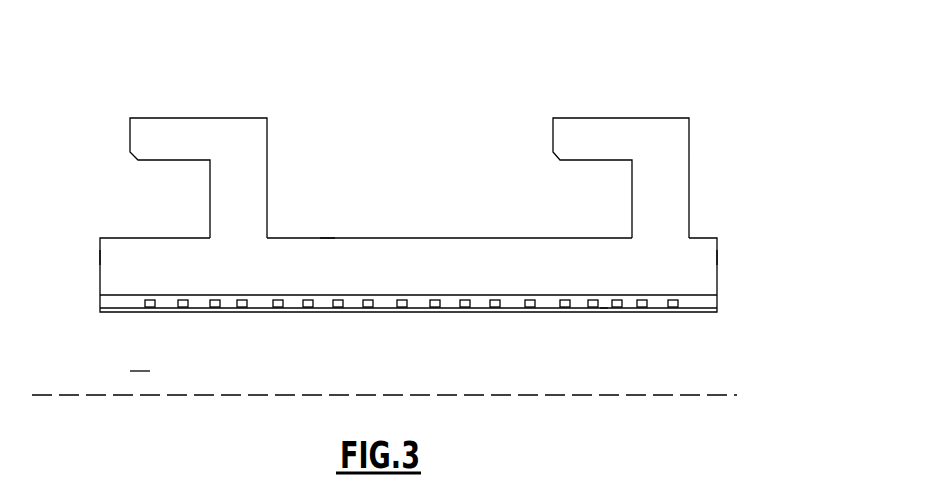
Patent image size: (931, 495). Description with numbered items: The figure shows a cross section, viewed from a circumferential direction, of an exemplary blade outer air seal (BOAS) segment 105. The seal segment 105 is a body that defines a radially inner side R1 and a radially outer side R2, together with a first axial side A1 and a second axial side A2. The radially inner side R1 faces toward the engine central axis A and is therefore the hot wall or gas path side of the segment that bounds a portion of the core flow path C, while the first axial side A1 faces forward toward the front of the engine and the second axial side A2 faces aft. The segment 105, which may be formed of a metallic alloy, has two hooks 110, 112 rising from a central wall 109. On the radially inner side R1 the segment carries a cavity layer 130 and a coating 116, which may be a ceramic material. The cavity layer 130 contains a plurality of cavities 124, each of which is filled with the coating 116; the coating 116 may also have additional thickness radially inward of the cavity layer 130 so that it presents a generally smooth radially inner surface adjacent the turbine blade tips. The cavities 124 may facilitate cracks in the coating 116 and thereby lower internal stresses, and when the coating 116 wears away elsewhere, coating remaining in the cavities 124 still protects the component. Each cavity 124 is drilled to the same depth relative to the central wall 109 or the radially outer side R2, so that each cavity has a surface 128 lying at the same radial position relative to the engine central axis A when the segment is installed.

The BOAS segment 105 is at (414, 193).
The central wall 109 is at (444, 272).
The hook 110 is at (192, 130).
The hook 112 is at (585, 130).
The coating 116 is at (437, 312).
The cavities 124 is at (183, 307).
The surface 128 is at (642, 300).
The cavity layer 130 is at (707, 300).
The radially inner side R1 is at (604, 308).
The radially outer side R2 is at (327, 238).
The first axial side A1 is at (100, 258).
The second axial side A2 is at (717, 258).
The engine central axis A is at (689, 393).
The core flow path C is at (140, 357).